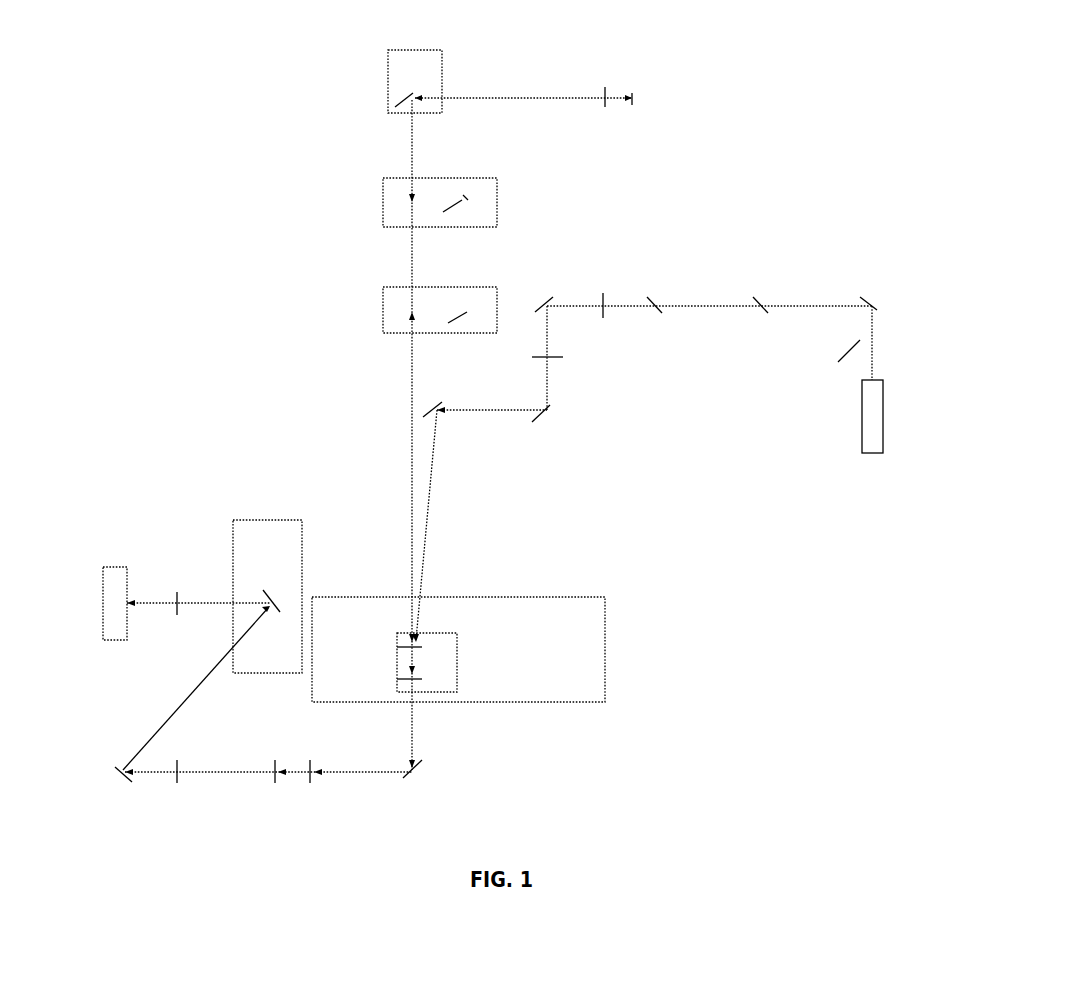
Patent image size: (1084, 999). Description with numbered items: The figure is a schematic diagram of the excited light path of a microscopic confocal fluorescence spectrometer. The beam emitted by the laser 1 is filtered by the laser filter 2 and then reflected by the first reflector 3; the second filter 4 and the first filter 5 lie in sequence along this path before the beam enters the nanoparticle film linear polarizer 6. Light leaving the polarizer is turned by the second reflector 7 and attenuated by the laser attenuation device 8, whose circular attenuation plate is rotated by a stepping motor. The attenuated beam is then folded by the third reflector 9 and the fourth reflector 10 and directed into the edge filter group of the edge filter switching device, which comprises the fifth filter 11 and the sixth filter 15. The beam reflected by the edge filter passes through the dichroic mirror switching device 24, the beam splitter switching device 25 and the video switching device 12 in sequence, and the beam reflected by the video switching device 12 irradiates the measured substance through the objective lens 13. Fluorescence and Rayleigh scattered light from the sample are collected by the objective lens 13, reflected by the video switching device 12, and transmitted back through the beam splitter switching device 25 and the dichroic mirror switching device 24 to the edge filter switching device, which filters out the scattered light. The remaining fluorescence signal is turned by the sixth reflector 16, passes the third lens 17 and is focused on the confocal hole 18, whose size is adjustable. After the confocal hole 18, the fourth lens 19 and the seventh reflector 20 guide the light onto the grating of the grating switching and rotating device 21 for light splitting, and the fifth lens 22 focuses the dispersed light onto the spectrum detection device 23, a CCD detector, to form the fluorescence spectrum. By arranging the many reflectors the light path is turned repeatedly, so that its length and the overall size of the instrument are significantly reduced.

The laser 1 is at (877, 453).
The laser filter 2 is at (838, 362).
The first reflector 3 is at (860, 297).
The second filter 4 is at (753, 297).
The first filter 5 is at (647, 297).
The nanoparticle film linear polarizer 6 is at (643, 295).
The second reflector 7 is at (553, 297).
The laser attenuation device 8 is at (557, 358).
The third reflector 9 is at (535, 422).
The fourth reflector 10 is at (437, 403).
The fifth filter 11 is at (423, 650).
The video switching device 12 is at (388, 58).
The objective lens 13 is at (607, 85).
The sixth filter 15 is at (422, 680).
The sixth reflector 16 is at (402, 782).
The third lens 17 is at (310, 783).
The confocal hole 18 is at (268, 805).
The fourth lens 19 is at (177, 783).
The seventh reflector 20 is at (115, 780).
The grating switching and rotating device 21 is at (233, 520).
The fifth lens 22 is at (177, 615).
The spectrum detection device 23 is at (107, 567).
The dichroic mirror switching device 24 is at (383, 288).
The beam splitter switching device 25 is at (383, 178).